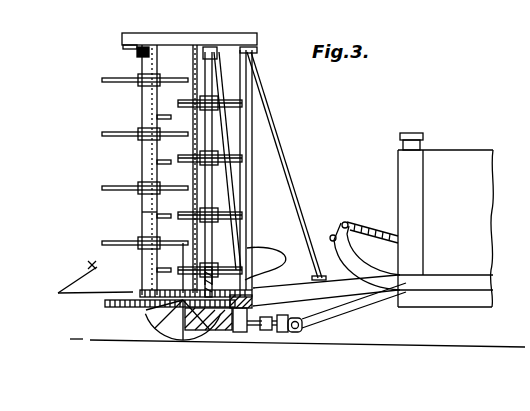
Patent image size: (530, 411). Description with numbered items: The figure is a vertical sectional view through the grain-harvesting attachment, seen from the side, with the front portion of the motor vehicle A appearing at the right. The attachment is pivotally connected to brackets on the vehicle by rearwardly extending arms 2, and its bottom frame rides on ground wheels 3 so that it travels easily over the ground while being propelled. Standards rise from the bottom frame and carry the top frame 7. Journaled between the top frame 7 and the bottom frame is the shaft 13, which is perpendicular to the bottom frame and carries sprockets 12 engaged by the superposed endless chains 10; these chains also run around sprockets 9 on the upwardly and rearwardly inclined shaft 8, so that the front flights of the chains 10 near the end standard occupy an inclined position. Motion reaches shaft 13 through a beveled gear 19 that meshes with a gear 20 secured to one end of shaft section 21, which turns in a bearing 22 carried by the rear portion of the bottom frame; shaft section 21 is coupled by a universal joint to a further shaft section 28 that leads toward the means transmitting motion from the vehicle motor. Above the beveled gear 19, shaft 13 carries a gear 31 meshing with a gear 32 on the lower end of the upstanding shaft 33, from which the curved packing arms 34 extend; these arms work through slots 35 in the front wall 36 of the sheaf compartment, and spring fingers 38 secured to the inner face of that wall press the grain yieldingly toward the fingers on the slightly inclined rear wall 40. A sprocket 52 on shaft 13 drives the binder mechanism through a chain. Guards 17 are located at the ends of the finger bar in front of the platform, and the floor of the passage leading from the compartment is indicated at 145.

The top frame 7 is at (176, 43).
The rear wall 40 is at (197, 70).
The front wall 36 is at (153, 97).
The curved packing arms 34 is at (112, 130).
The slots 35 is at (140, 185).
The guards 17 is at (148, 246).
The spring fingers 38 is at (168, 160).
The upstanding shaft 33 is at (158, 212).
The shaft 13 is at (213, 84).
The sprockets 12 is at (218, 153).
The endless chains 10 is at (240, 157).
The inclined shaft 8 is at (230, 183).
The sprockets 9 is at (225, 207).
The gear 31 is at (245, 279).
The gear 32 is at (120, 307).
The beveled gear 19 is at (185, 322).
The floor of the passage 145 is at (167, 305).
The sprocket 52 is at (189, 316).
The ground wheels 3 is at (222, 320).
The gear 20 is at (236, 332).
The bearing 22 is at (246, 330).
The shaft section 21 is at (266, 330).
The rearwardly extending arms 2 is at (322, 290).
The shaft section 28 is at (350, 283).
The front portion of a motor vehicle A is at (470, 158).